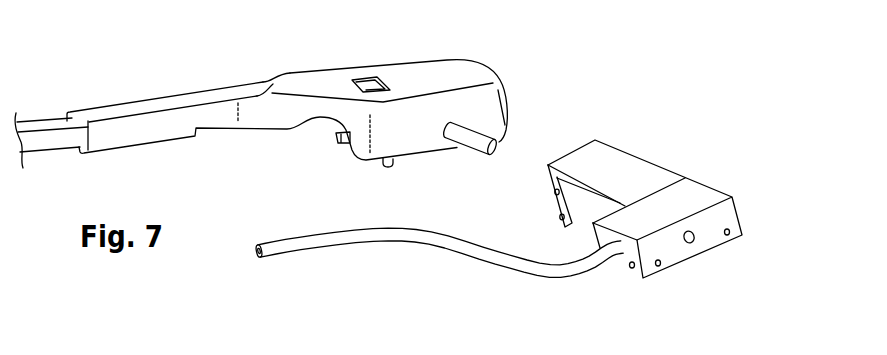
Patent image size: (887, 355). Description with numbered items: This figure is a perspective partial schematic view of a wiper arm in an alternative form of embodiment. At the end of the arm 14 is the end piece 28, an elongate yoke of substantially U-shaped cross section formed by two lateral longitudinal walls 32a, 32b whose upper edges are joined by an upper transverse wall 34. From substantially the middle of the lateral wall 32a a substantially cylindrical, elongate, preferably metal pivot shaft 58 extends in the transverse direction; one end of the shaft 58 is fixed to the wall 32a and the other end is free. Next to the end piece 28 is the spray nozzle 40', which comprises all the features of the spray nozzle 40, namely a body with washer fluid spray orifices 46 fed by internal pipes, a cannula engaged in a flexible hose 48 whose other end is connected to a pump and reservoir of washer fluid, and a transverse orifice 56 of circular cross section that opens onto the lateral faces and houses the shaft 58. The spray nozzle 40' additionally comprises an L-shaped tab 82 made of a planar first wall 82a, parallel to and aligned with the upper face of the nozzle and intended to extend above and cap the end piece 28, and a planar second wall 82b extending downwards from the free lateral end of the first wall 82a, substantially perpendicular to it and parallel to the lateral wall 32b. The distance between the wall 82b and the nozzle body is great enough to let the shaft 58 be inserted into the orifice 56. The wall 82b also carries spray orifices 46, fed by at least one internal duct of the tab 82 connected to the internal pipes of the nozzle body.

The arm 14 is at (185, 75).
The end piece 28 is at (307, 87).
The lateral longitudinal wall 32b is at (403, 66).
The upper transverse wall 34 is at (455, 75).
The lateral longitudinal wall 32a is at (493, 108).
The pivot shaft 58 is at (480, 148).
The flexible hose 48 is at (396, 239).
The L-shaped tab 82 is at (610, 209).
The first wall 82a is at (650, 178).
The second wall 82b is at (577, 212).
The orifice 46 is at (560, 217).
The transverse orifice 56 is at (692, 242).
The spray nozzle 40' is at (756, 93).
The spray nozzle 40 is at (372, 349).